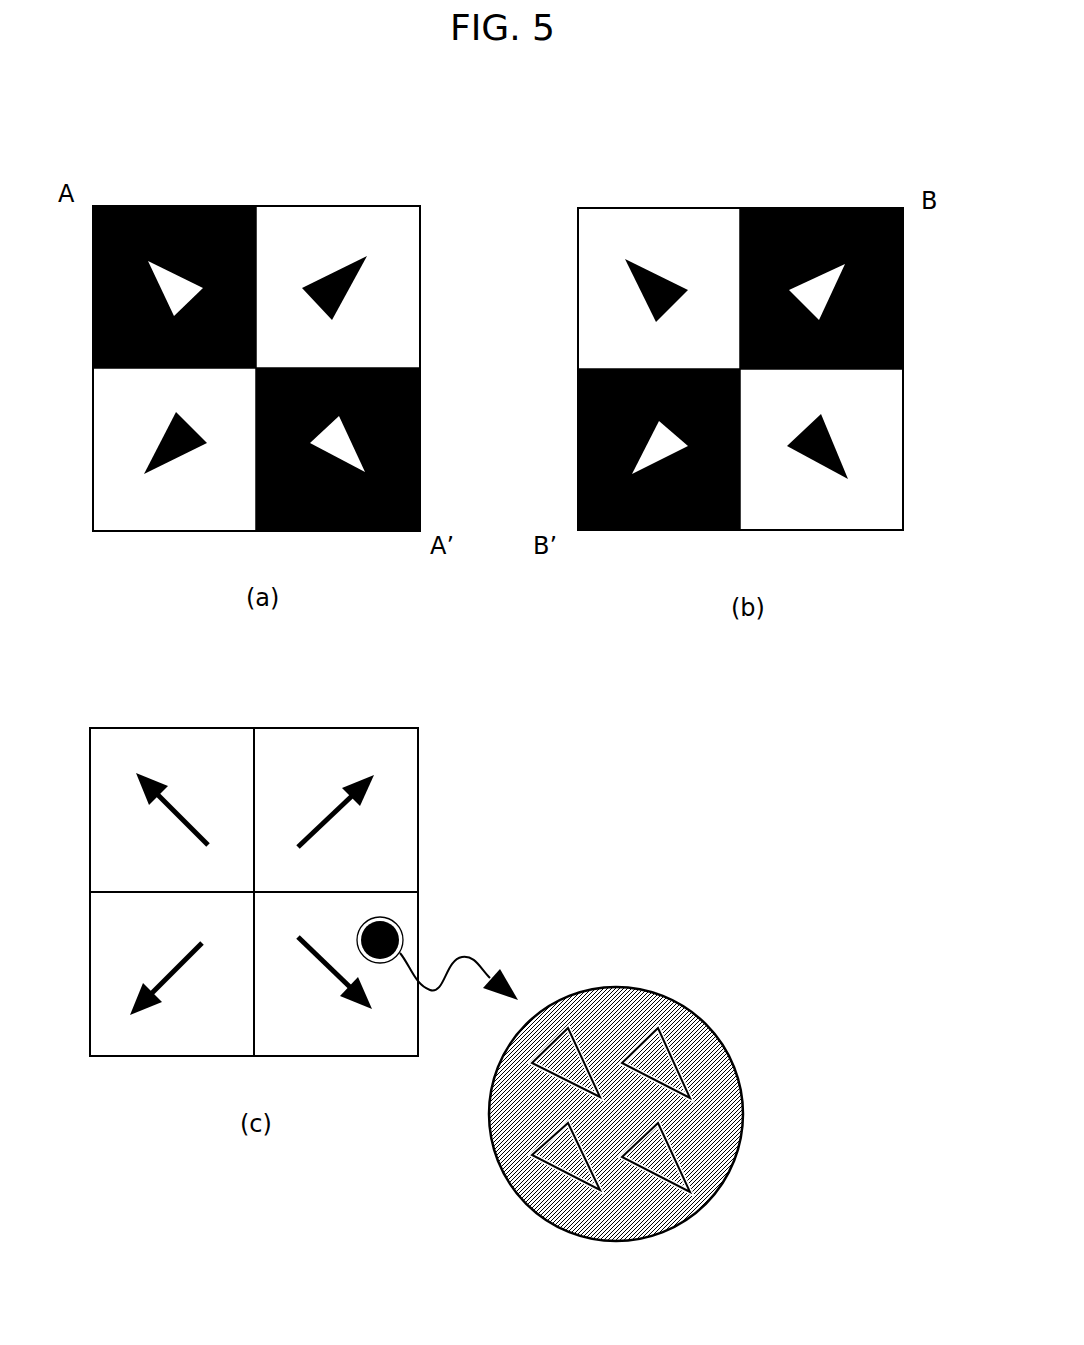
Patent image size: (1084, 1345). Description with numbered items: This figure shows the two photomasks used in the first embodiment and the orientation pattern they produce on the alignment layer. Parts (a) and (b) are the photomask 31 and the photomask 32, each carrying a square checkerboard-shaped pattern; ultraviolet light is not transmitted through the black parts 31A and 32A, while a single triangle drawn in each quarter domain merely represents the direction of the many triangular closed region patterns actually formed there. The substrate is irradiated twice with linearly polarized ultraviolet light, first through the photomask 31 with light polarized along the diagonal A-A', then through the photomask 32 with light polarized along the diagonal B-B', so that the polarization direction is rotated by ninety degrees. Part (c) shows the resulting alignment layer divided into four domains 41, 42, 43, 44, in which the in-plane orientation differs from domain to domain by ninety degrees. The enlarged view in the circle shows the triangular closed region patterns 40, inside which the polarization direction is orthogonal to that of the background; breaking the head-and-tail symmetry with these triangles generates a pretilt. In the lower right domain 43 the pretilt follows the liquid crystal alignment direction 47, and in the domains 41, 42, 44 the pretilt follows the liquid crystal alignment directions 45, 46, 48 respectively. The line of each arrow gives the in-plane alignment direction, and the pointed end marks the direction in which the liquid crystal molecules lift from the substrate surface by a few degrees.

The photomask 31 is at (256, 337).
The black part 31A is at (220, 206).
The photomask 32 is at (740, 337).
The black part 32A is at (850, 208).
The triangular closed region patterns 40 is at (660, 1067).
The divided domain 41 is at (140, 741).
The divided domain 42 is at (404, 783).
The divided domain 43 is at (374, 1041).
The divided domain 44 is at (138, 1039).
The liquid crystal alignment direction 45 is at (191, 820).
The liquid crystal alignment direction 46 is at (327, 826).
The liquid crystal alignment direction 47 is at (319, 962).
The liquid crystal alignment direction 48 is at (181, 969).